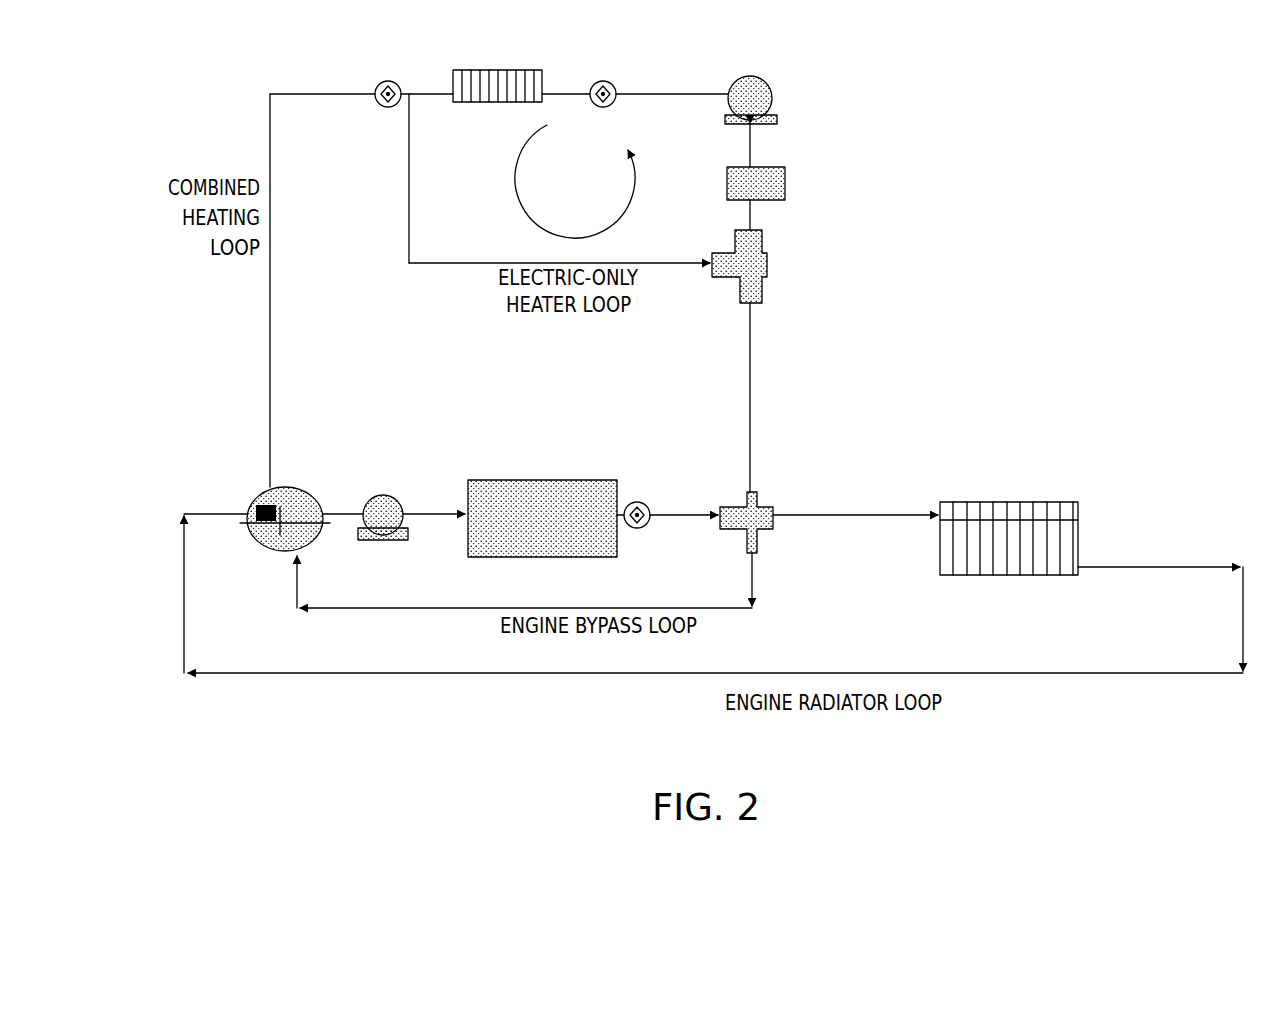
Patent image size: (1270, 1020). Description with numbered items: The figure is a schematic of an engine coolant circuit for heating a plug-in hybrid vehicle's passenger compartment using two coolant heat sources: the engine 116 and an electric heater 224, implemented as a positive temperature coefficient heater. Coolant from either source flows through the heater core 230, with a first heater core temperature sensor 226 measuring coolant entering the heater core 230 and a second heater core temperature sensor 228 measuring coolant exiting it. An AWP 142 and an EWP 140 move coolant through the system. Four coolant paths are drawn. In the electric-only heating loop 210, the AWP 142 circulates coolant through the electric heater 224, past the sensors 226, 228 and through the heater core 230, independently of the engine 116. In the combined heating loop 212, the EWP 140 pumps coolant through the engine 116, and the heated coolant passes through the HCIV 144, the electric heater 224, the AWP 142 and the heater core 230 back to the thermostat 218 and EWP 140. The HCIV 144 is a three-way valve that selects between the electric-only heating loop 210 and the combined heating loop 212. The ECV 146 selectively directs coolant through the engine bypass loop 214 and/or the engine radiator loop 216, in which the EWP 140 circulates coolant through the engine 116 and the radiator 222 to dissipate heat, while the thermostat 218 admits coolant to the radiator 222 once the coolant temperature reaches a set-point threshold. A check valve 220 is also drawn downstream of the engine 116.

The engine 116 is at (553, 480).
The EWP 140 is at (398, 498).
The AWP 142 is at (766, 80).
The HCIV 144 is at (770, 265).
The ECV 146 is at (775, 511).
The electric-only heating loop 210 is at (409, 205).
The combined heating loop 212 is at (270, 343).
The engine bypass loop 214 is at (373, 608).
The engine radiator loop 216 is at (487, 675).
The thermostat 218 is at (308, 493).
The engine outlet check valve 220 is at (640, 502).
The radiator 222 is at (1080, 531).
The electric heater 224 is at (790, 184).
The first heater core temperature sensor 226 is at (606, 81).
The second heater core temperature sensor 228 is at (392, 81).
The heater core 230 is at (496, 70).